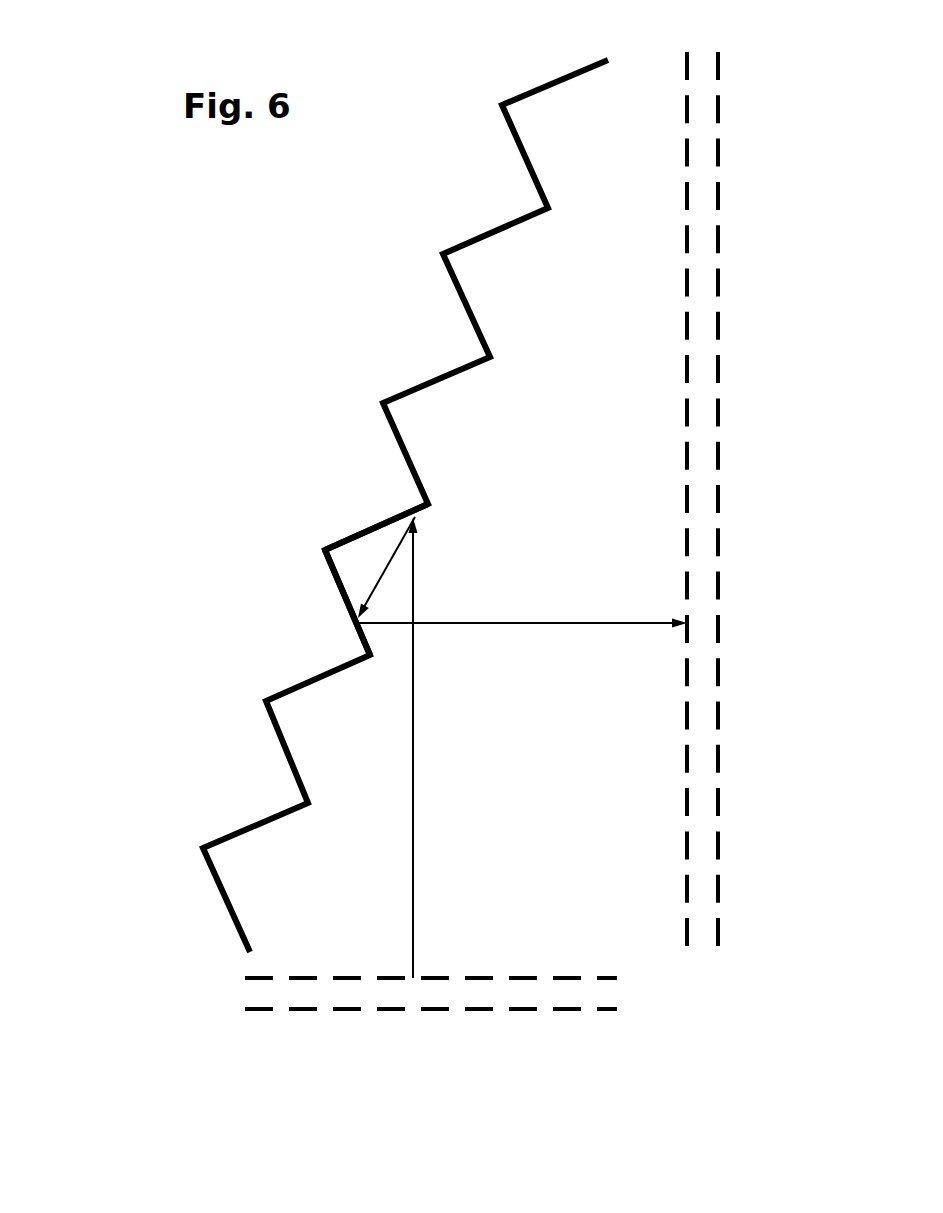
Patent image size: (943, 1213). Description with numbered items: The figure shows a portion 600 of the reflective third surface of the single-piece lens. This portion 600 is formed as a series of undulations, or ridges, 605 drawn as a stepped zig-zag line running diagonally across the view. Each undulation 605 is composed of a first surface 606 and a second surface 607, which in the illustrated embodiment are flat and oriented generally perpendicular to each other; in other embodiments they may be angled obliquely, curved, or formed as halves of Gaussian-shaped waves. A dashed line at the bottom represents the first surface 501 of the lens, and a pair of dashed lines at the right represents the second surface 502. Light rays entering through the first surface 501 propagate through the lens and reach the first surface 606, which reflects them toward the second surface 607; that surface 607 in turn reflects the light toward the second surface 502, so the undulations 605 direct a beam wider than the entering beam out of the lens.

The portion of the third surface 600 is at (126, 232).
The first surface 501 is at (580, 1009).
The second surface 502 is at (718, 110).
The undulations 605 is at (265, 700).
The first surface of undulation 606 is at (372, 527).
The second surface of undulation 607 is at (340, 597).